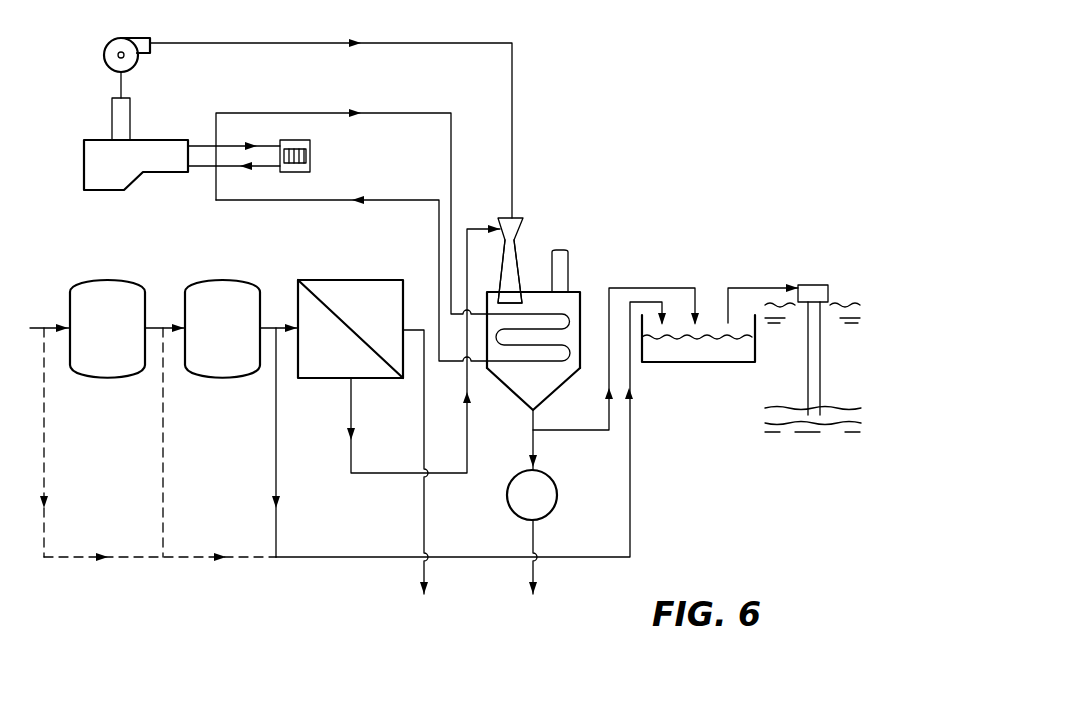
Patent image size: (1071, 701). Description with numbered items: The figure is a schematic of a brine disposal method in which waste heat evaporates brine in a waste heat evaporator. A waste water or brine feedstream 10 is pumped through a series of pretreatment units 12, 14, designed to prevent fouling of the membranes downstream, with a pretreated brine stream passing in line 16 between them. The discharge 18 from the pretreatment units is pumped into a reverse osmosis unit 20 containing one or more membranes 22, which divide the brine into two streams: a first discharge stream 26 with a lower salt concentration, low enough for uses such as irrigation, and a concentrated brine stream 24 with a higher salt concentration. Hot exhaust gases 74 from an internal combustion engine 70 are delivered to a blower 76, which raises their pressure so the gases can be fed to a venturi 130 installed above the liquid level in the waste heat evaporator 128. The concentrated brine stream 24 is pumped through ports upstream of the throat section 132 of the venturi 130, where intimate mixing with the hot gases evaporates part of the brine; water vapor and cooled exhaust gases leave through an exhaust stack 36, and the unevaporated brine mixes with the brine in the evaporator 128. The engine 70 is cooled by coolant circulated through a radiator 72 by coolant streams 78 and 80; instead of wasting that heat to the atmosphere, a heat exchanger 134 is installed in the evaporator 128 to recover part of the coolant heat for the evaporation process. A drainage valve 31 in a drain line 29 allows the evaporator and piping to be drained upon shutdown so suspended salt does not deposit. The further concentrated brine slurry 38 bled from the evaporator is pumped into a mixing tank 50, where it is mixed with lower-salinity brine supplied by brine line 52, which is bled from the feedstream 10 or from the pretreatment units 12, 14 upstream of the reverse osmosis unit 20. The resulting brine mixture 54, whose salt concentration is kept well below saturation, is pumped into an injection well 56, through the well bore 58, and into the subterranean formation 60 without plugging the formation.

The brine feedstream 10 is at (38, 326).
The pretreatment unit 12 is at (118, 280).
The pretreatment unit 14 is at (212, 380).
The pretreated brine stream line 16 is at (154, 332).
The pretreated brine feedstream 18 is at (264, 324).
The reverse osmosis unit 20 is at (330, 280).
The membrane 22 is at (336, 311).
The concentrated brine stream 24 is at (378, 476).
The first discharge stream 26 is at (424, 440).
The drain line 29 is at (538, 450).
The drainage valve 31 is at (554, 506).
The exhaust stack 36 is at (568, 264).
The concentrated brine slurry 38 is at (592, 432).
The mixing tank 50 is at (708, 364).
The brine line 52 is at (354, 556).
The brine mixture 54 is at (758, 289).
The injection well 56 is at (827, 290).
The well bore 58 is at (822, 338).
The subterranean formation 60 is at (793, 408).
The internal combustion engine 70 is at (84, 172).
The radiator 72 is at (310, 156).
The hot exhaust gases 74 is at (424, 43).
The blower 76 is at (112, 36).
The coolant stream 78 is at (208, 142).
The coolant stream 80 is at (198, 174).
The waste heat evaporator 128 is at (582, 300).
The venturi 130 is at (518, 240).
The throat section 132 is at (508, 216).
The heat exchanger 134 is at (539, 370).